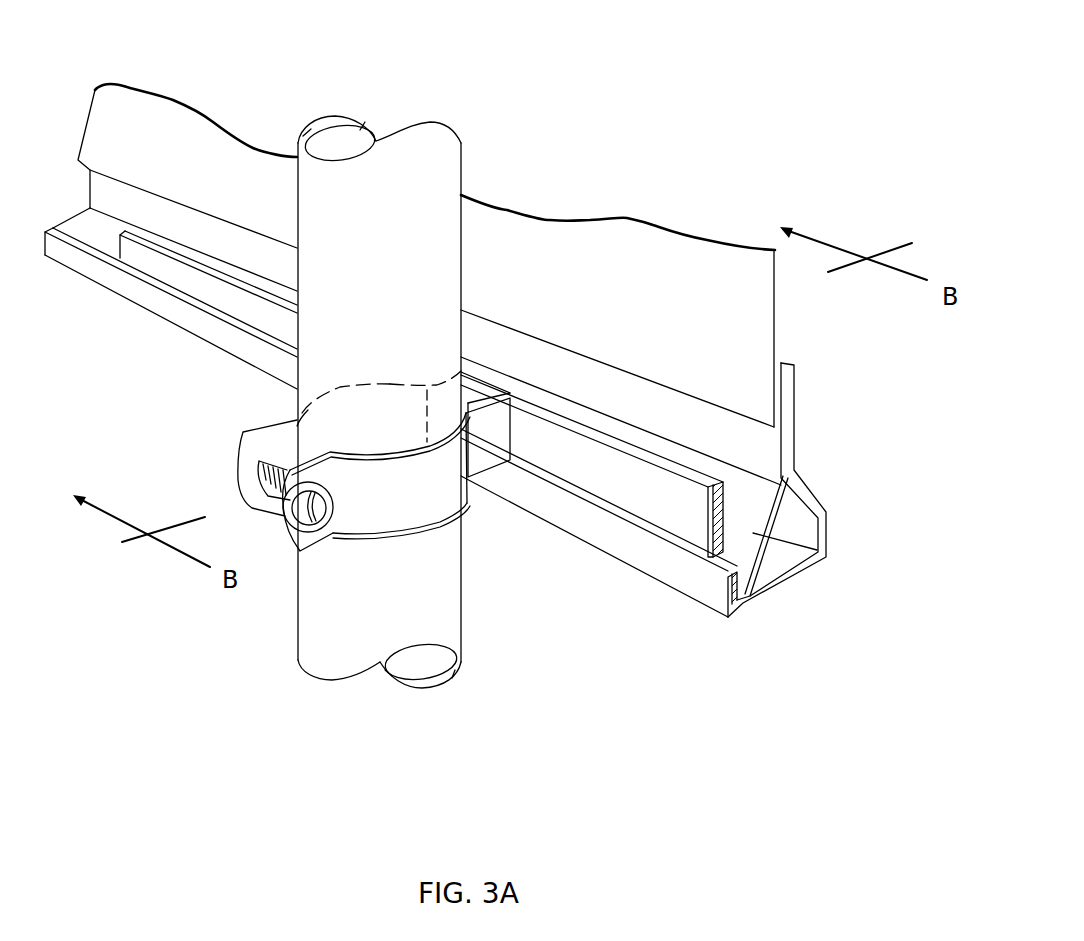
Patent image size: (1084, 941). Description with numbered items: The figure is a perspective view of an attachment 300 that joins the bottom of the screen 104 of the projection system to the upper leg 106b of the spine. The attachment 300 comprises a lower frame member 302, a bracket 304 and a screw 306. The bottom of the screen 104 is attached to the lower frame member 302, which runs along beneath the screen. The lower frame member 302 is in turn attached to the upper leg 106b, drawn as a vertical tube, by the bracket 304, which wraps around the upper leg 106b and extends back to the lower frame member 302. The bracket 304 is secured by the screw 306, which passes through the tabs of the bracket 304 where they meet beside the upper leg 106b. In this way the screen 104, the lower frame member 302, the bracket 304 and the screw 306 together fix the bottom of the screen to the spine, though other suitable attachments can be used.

The attachment 300 is at (616, 66).
The screen 104 is at (174, 92).
The lower frame member 302 is at (797, 429).
The bracket 304 is at (249, 438).
The screw 306 is at (242, 487).
The upper leg 106b is at (463, 613).